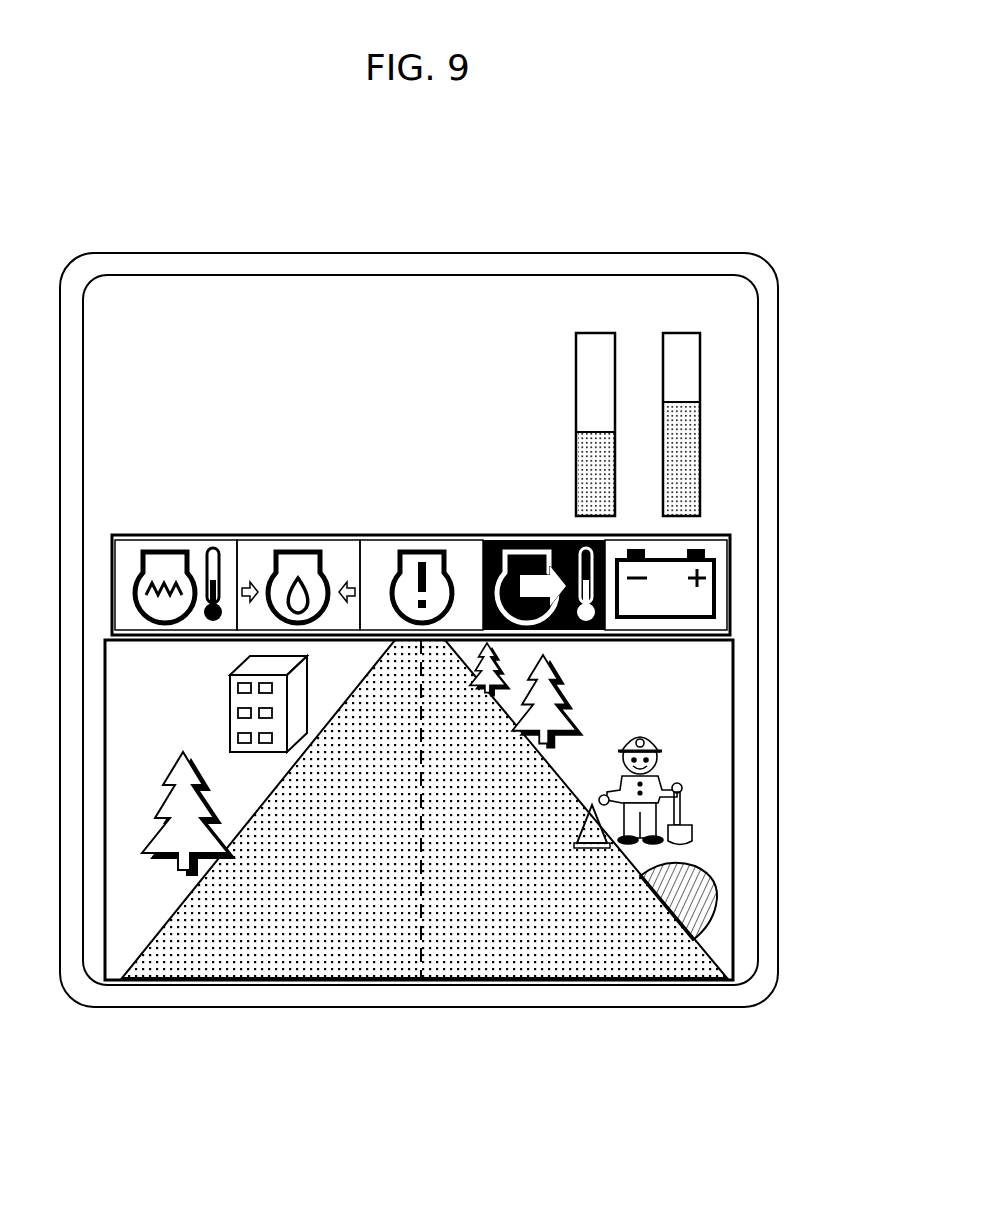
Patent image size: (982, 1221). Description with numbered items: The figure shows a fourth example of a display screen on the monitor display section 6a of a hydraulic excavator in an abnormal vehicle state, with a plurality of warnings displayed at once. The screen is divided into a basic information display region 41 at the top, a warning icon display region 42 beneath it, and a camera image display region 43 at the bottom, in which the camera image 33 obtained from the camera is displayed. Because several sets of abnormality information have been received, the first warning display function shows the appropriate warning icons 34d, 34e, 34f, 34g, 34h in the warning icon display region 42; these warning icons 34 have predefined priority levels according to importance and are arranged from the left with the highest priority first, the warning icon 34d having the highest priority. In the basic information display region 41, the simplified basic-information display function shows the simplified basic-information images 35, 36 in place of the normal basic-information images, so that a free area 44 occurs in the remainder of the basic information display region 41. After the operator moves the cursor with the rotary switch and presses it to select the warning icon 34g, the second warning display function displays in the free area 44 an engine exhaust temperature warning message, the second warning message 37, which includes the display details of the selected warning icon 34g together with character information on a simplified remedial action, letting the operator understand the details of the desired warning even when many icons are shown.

The monitor display section 6a is at (730, 221).
The free area 44 is at (374, 246).
The second warning message 37 is at (173, 284).
The basic information display region 41 is at (784, 383).
The warning icon display region 42 is at (784, 550).
The camera image display region 43 is at (784, 750).
The warning icons 34 is at (110, 568).
The warning icon 34d is at (166, 548).
The warning icon 34e is at (299, 548).
The warning icon 34f is at (423, 548).
The warning icon 34g is at (519, 548).
The warning icon 34h is at (670, 618).
The simplified basic-information image 35 is at (576, 372).
The simplified basic-information image 36 is at (700, 372).
The camera image 33 is at (292, 968).